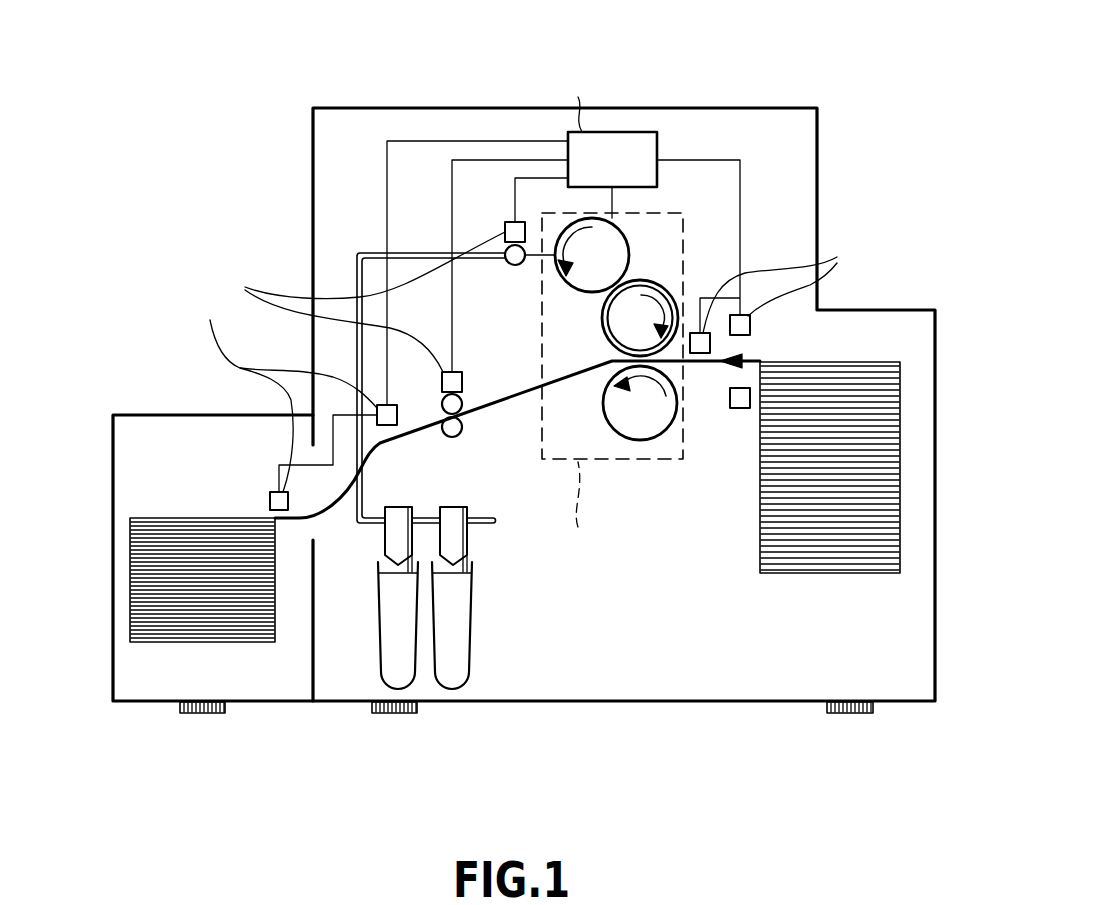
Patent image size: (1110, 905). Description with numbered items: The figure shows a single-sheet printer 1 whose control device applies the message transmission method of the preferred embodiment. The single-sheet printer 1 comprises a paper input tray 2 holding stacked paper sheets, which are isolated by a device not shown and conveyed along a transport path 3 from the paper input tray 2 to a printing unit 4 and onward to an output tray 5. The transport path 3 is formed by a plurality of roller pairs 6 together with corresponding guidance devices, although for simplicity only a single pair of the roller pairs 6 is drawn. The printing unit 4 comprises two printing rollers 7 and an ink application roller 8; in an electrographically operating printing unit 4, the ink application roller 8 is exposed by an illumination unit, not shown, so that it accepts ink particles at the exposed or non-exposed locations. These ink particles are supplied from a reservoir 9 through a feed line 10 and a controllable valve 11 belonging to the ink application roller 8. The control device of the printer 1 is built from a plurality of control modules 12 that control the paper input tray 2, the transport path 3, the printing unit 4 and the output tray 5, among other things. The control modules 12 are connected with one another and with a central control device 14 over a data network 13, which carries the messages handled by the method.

The single-sheet printer 1 is at (835, 62).
The paper input tray 2 is at (872, 603).
The transport path 3 is at (497, 402).
The printing unit 4 is at (617, 461).
The output tray 5 is at (130, 663).
The roller pairs 6 is at (441, 417).
The printing rollers 7 is at (648, 419).
The ink application roller 8 is at (600, 271).
The reservoir 9 is at (648, 334).
The feed line 10 is at (357, 347).
The controllable valve 11 is at (515, 266).
The control modules 12 is at (505, 228).
The data network 13 is at (387, 178).
The central control device 14 is at (628, 175).